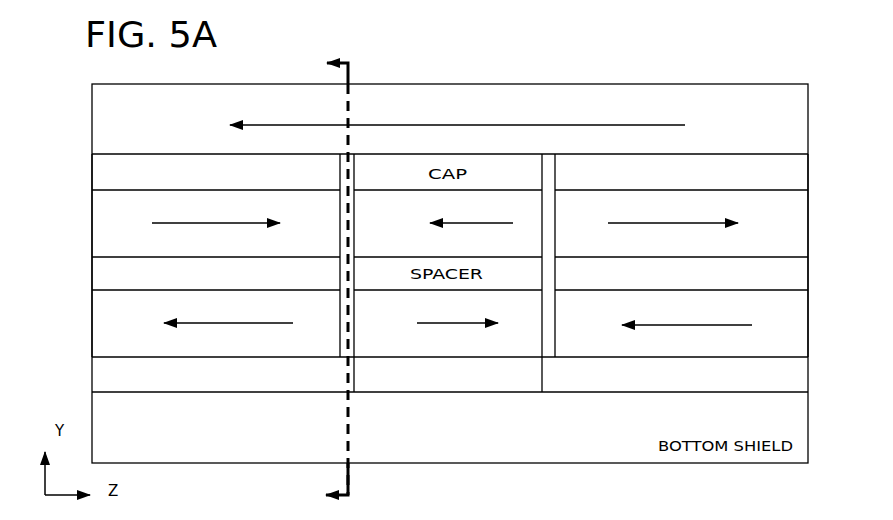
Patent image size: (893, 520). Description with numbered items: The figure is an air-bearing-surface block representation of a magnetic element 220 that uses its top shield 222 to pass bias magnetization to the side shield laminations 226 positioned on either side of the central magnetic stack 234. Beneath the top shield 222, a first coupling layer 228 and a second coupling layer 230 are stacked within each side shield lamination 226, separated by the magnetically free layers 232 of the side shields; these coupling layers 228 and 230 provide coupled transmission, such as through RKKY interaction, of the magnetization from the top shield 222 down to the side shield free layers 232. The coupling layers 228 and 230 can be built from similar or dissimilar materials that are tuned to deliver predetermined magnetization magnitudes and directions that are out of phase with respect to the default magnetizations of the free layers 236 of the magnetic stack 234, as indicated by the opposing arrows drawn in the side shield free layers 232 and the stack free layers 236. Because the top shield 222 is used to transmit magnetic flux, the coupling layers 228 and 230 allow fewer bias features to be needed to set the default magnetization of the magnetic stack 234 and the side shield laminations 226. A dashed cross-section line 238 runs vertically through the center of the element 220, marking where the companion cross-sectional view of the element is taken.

The magnetic element 220 is at (764, 52).
The top shield 222 is at (450, 123).
The side shield laminations 226 is at (89, 350).
The first coupling layer 228 is at (91, 178).
The second coupling layer 230 is at (91, 280).
The magnetically free layers of the side shield laminations 232 is at (448, 274).
The magnetic stack 234 is at (543, 360).
The free layers of the magnetic stack 236 is at (437, 273).
The cross-section line 238 is at (355, 283).